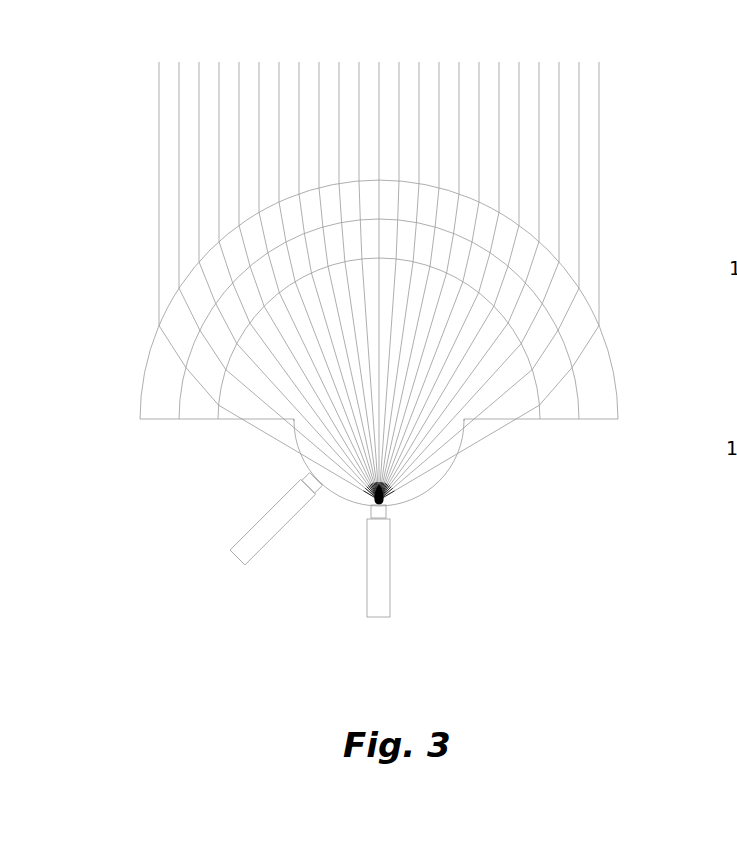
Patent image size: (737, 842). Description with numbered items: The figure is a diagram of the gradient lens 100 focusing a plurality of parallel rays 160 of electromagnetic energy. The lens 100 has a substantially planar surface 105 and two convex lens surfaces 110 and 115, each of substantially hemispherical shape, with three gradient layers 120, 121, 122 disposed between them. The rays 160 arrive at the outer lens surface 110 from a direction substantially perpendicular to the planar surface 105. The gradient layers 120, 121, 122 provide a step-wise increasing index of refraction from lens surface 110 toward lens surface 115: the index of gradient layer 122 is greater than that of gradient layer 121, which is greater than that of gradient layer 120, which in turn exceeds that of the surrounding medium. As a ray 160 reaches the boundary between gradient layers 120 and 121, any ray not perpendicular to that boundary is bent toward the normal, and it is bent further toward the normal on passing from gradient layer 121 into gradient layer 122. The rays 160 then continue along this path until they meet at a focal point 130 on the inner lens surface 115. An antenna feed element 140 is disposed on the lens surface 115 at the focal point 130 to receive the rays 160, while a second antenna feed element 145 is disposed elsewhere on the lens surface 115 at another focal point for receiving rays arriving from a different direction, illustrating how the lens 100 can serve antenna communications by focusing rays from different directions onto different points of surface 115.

The gradient lens 100 is at (492, 458).
The planar surface 105 is at (510, 421).
The lens surface 110 is at (613, 368).
The lens surface 115 is at (398, 501).
The gradient layer 120 is at (165, 421).
The gradient layer 121 is at (199, 421).
The gradient layer 122 is at (257, 421).
The focal point 130 is at (387, 514).
The antenna feed element 140 is at (390, 592).
The antenna feed element 145 is at (236, 557).
The parallel rays 160 is at (629, 119).